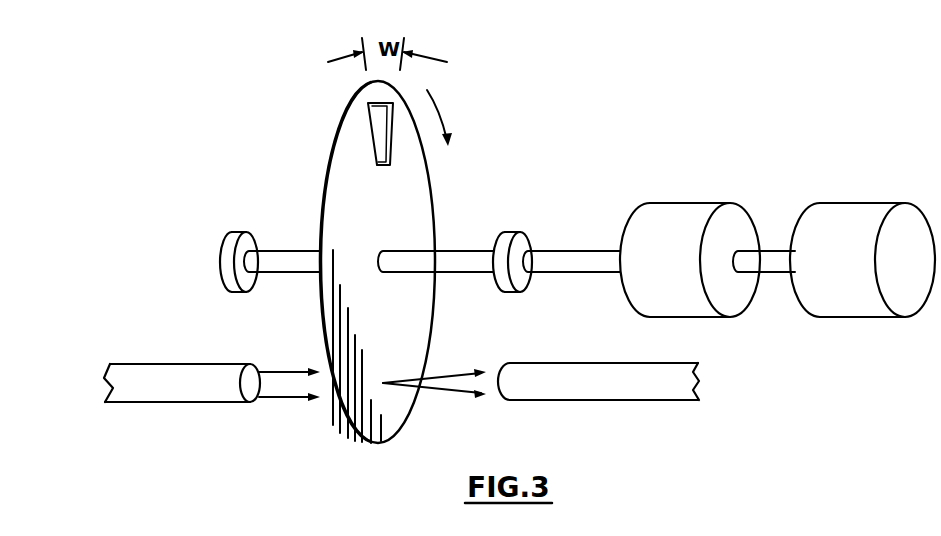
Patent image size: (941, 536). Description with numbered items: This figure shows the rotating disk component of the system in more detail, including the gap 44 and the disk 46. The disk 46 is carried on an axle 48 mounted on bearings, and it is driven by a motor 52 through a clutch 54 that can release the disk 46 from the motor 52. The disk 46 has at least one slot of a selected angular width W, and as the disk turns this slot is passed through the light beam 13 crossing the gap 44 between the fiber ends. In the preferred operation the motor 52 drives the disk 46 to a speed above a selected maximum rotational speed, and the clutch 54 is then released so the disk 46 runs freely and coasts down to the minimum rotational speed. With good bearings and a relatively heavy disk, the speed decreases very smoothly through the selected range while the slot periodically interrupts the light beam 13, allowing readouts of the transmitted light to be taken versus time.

The light beam 13 is at (437, 394).
The gap 44 is at (276, 424).
The disk 46 is at (338, 161).
The axle 48 is at (458, 250).
The motor 52 is at (826, 204).
The clutch 54 is at (676, 204).